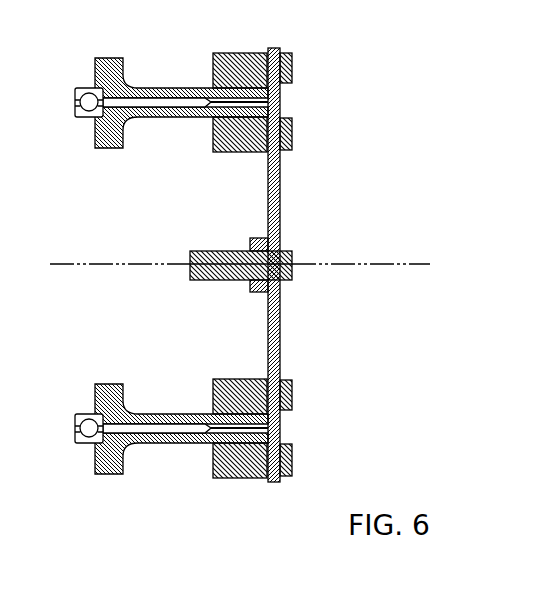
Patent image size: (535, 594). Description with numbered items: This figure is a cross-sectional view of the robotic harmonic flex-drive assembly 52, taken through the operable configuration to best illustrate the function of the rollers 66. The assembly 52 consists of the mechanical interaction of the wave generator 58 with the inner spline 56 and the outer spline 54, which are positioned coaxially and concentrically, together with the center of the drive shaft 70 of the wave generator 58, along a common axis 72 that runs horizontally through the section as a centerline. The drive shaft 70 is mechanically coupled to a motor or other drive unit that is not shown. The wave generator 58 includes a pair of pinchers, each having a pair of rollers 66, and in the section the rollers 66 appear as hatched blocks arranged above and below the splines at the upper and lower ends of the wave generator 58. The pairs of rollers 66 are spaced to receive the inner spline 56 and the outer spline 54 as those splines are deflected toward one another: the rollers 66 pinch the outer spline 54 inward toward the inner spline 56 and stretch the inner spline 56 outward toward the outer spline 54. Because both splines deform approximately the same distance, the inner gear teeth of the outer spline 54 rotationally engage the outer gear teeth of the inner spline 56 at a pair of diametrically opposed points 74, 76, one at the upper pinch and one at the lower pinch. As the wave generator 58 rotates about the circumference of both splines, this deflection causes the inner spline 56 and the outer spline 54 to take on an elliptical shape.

The robotic harmonic flex-drive assembly 52 is at (388, 113).
The outer spline 54 is at (97, 56).
The inner spline 56 is at (96, 138).
The wave generator 58 is at (281, 342).
The rollers 66 is at (240, 52).
The drive shaft 70 is at (288, 277).
The axis 72 is at (413, 264).
The diametrically opposed point 74 is at (272, 96).
The diametrically opposed point 76 is at (268, 437).